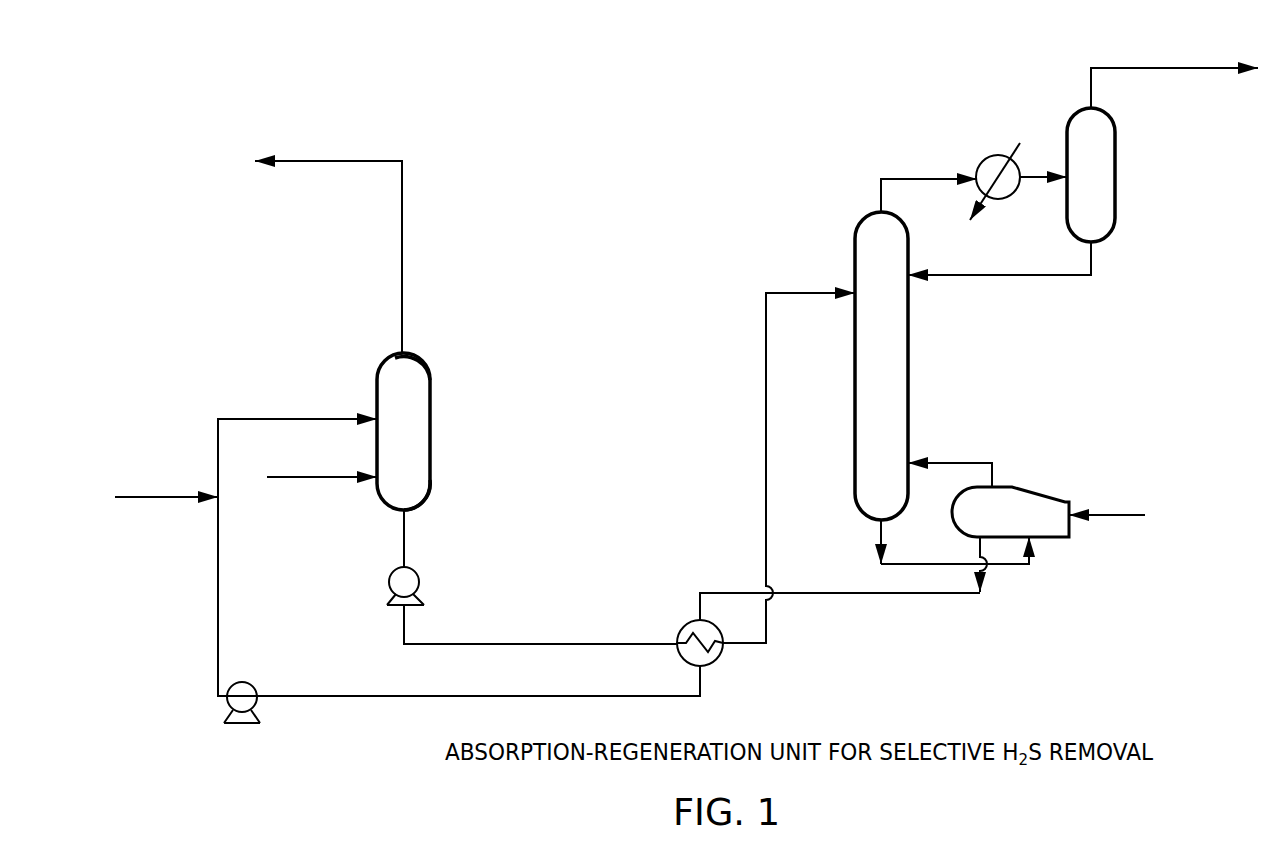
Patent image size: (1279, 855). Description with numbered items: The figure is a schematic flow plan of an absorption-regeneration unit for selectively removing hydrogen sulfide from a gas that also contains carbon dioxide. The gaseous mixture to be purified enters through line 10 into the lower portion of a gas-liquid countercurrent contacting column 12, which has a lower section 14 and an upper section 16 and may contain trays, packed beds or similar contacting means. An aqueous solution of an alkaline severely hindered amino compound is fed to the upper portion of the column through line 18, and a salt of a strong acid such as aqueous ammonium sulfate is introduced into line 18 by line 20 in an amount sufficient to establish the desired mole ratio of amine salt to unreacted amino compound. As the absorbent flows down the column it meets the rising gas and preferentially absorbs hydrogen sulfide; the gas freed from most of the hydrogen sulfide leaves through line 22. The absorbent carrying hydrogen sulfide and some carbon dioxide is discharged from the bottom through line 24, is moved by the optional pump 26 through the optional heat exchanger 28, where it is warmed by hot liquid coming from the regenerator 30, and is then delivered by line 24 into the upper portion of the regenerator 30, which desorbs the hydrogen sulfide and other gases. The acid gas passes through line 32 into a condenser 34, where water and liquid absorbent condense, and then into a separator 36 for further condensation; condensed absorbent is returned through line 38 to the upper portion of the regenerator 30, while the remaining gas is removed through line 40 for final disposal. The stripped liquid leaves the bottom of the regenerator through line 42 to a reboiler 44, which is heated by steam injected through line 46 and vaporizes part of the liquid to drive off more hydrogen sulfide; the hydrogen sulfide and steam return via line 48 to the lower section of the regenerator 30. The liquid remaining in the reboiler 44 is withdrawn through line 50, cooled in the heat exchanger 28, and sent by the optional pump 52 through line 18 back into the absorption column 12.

The line 10 is at (340, 476).
The gas-liquid countercurrent contacting column 12 is at (431, 405).
The lower section 14 is at (420, 488).
The upper section 16 is at (431, 368).
The line 18 is at (308, 418).
The line 20 is at (176, 496).
The line 22 is at (403, 220).
The line 24 is at (406, 520).
The pump 26 is at (420, 582).
The heat exchanger 28 is at (722, 652).
The regenerator 30 is at (909, 348).
The line 32 is at (920, 178).
The condenser 34 is at (996, 155).
The separator 36 is at (1116, 165).
The line 38 is at (1032, 276).
The line 40 is at (1152, 66).
The line 42 is at (878, 527).
The reboiler 44 is at (1012, 487).
The line 46 is at (1100, 512).
The line 48 is at (940, 462).
The line 50 is at (983, 572).
The pump 52 is at (253, 684).